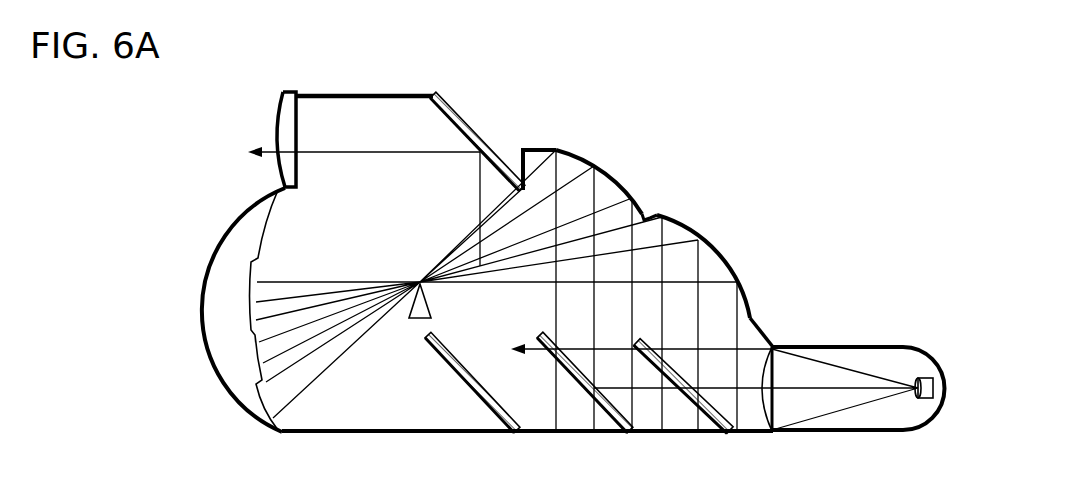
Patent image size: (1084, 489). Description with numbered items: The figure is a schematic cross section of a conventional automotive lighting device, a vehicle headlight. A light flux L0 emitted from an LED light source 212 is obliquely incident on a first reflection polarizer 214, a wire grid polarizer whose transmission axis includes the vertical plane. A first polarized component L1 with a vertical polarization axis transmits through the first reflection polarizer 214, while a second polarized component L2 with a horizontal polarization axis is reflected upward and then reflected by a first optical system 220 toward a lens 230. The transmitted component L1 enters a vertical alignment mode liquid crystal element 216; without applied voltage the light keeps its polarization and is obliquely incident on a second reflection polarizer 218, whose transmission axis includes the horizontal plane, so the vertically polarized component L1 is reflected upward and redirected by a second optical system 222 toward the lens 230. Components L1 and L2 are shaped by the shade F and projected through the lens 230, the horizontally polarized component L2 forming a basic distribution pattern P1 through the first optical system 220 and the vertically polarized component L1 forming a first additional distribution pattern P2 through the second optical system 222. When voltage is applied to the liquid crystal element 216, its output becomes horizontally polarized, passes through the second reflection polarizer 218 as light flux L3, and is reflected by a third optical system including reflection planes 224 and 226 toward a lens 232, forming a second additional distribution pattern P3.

The LED light source 212 is at (882, 326).
The first reflection polarizer 214 is at (745, 433).
The liquid crystal element 216 is at (703, 433).
The second reflection polarizer 218 is at (593, 403).
The first optical system 220 is at (686, 212).
The second optical system 222 is at (614, 170).
The reflection plane 224 is at (473, 397).
The reflection plane 226 is at (437, 104).
The lens 230 is at (225, 356).
The lens 232 is at (283, 117).
The shade F is at (420, 280).
The light flux L0 is at (843, 390).
The first polarized component L1 is at (594, 298).
The second polarized component L2 is at (703, 264).
The light flux L3 is at (480, 190).
The basic distribution pattern P1 is at (250, 292).
The first additional distribution pattern P2 is at (252, 380).
The second additional distribution pattern P3 is at (340, 153).